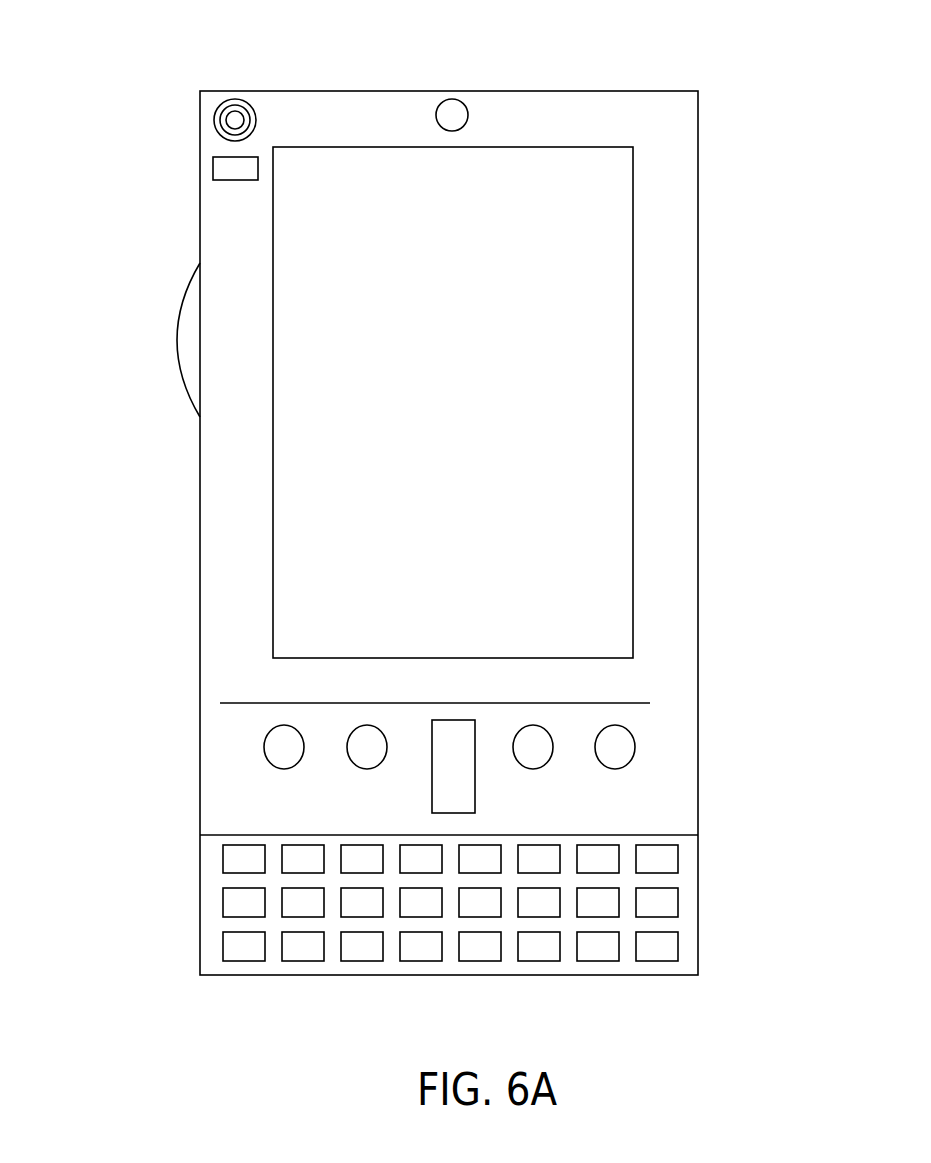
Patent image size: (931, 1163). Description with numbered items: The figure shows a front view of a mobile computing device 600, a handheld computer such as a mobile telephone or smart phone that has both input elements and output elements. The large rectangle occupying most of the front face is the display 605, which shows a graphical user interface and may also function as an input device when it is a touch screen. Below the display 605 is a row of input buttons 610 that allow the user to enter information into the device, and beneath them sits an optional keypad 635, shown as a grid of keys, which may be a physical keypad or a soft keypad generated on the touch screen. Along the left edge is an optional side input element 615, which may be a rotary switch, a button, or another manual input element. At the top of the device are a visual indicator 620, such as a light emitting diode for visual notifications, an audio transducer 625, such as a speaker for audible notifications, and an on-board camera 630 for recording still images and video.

The mobile computing device 600 is at (685, 110).
The display 605 is at (385, 570).
The input buttons 610 is at (452, 772).
The side input element 615 is at (190, 340).
The visual indicator 620 is at (212, 172).
The audio transducer 625 is at (216, 121).
The on-board camera 630 is at (467, 112).
The keypad 635 is at (208, 952).